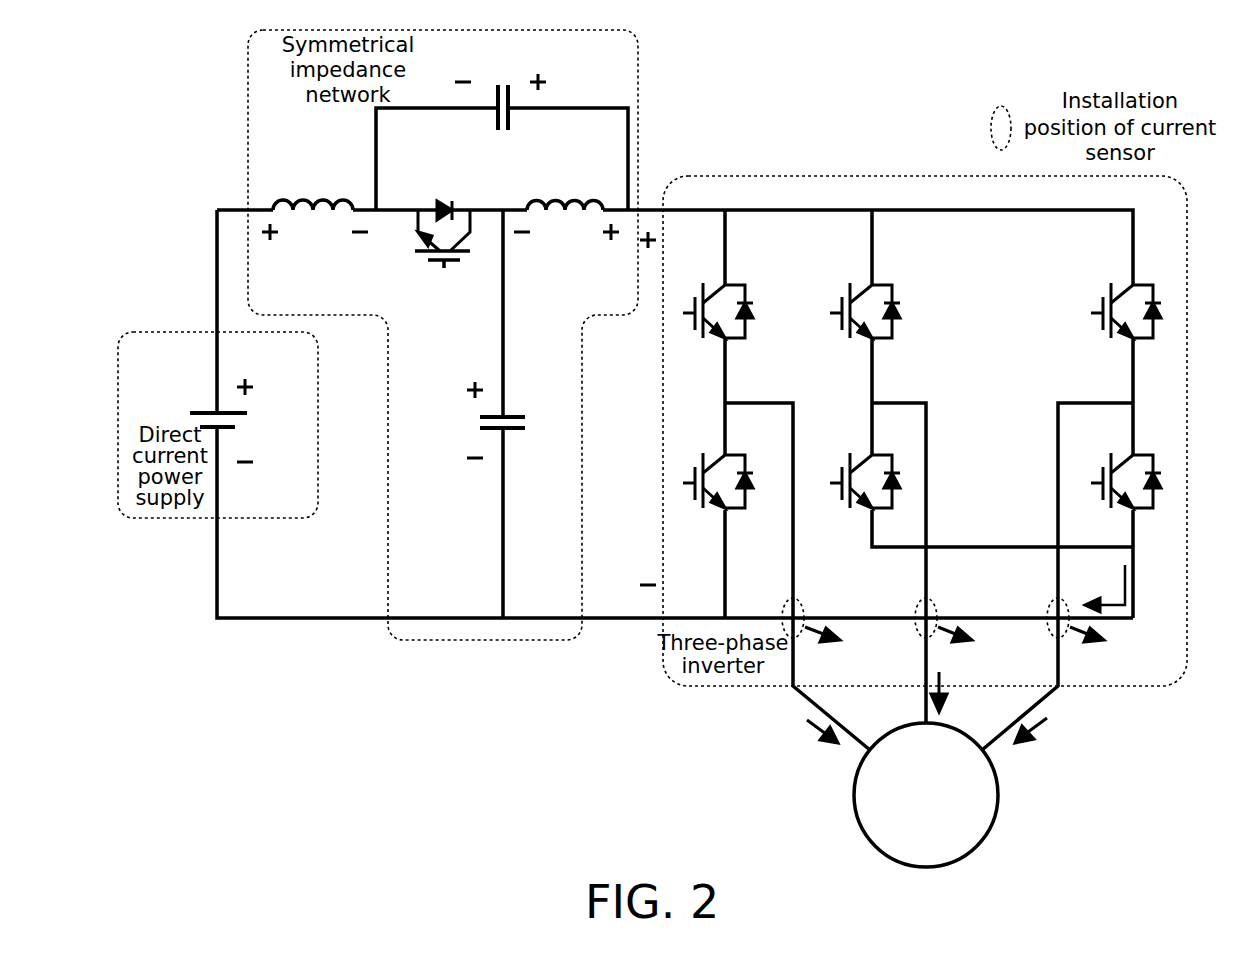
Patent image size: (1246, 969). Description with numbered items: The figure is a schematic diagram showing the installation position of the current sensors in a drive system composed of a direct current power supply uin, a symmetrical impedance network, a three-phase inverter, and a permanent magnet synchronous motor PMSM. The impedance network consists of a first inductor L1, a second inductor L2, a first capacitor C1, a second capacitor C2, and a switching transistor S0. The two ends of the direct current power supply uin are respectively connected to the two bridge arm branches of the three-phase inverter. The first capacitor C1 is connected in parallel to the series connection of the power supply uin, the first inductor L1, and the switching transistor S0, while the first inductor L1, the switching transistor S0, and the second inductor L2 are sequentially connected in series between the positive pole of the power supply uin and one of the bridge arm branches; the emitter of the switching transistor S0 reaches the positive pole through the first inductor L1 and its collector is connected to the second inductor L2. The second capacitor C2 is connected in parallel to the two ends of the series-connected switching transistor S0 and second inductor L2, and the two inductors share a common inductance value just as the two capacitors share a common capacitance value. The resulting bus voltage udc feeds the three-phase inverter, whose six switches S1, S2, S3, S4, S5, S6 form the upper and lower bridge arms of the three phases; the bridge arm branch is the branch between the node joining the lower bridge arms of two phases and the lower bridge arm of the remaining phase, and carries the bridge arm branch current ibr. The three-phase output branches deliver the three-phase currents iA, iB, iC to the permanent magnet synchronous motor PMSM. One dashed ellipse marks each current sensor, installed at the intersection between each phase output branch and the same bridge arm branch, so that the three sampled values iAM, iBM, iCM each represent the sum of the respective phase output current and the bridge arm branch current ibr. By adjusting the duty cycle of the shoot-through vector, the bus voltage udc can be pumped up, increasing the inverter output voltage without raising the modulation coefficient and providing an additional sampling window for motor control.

The direct current power supply uin is at (243, 420).
The first inductor L1 is at (315, 203).
The second inductor L2 is at (566, 203).
The first capacitor C1 is at (502, 130).
The second capacitor C2 is at (469, 420).
The switching transistor S0 is at (442, 257).
The DC link voltage udc is at (638, 408).
The inverter switch S1 is at (708, 310).
The inverter switch S2 is at (1116, 480).
The inverter switch S3 is at (855, 310).
The inverter switch S4 is at (708, 480).
The inverter switch S5 is at (1116, 310).
The inverter switch S6 is at (855, 480).
The current of the bridge arm branch ibr is at (1105, 587).
The sampled current value of the phase A current sensor iAM is at (843, 651).
The sampled current value of the phase B current sensor iBM is at (976, 651).
The sampled current value of the phase C current sensor iCM is at (1108, 651).
The phase A current iA is at (809, 738).
The phase B current iB is at (951, 699).
The phase C current iC is at (1045, 737).
The permanent magnet synchronous motor PMSM is at (926, 795).